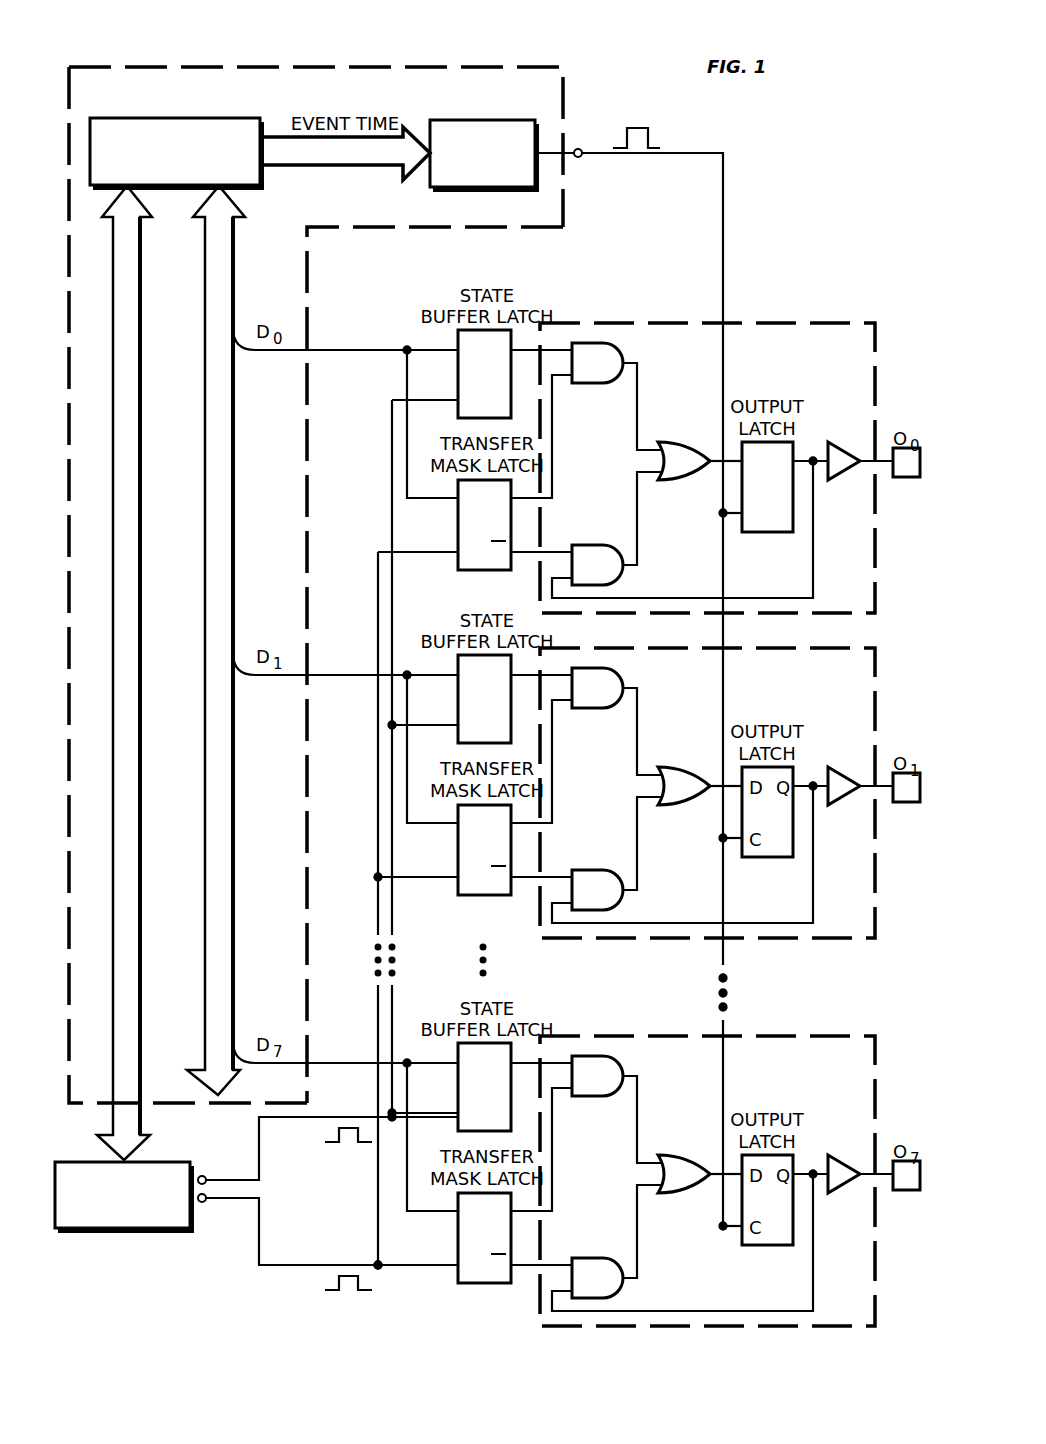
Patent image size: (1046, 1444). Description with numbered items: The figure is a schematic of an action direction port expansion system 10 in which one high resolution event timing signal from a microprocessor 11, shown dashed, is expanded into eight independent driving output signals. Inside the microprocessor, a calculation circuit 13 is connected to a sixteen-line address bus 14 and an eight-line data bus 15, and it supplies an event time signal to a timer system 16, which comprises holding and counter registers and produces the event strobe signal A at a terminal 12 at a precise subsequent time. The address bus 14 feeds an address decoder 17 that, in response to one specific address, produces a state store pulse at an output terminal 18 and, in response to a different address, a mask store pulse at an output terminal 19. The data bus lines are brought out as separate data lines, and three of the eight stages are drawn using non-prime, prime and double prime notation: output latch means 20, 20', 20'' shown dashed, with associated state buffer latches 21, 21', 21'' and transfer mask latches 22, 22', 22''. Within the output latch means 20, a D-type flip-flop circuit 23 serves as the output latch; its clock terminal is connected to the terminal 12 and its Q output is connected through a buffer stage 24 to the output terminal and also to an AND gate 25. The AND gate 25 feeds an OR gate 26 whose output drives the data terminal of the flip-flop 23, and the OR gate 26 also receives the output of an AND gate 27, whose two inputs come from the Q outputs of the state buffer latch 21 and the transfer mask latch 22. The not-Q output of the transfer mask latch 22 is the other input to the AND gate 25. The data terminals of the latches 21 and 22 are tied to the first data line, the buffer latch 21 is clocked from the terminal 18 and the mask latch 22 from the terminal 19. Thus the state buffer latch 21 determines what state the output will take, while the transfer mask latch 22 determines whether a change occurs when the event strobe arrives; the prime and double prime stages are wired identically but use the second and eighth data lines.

The action direction port expansion system 10 is at (184, 1309).
The microprocessor 11 is at (307, 272).
The terminal 12 is at (582, 157).
The calculation circuit 13 is at (175, 118).
The address bus 14 is at (140, 437).
The data bus 15 is at (233, 460).
The timer system 16 is at (483, 120).
The address decoder 17 is at (122, 1231).
The output terminal 18 is at (205, 1177).
The output terminal 19 is at (206, 1202).
The output latch means 20 is at (707, 448).
The output latch means 20' is at (707, 817).
The output latch means 20'' is at (707, 1160).
The state buffer latch 21 is at (462, 374).
The state buffer latch 21' is at (459, 699).
The state buffer latch 21'' is at (457, 1087).
The transfer mask latch 22 is at (462, 525).
The transfer mask latch 22' is at (459, 850).
The transfer mask latch 22'' is at (457, 1238).
The D-type flip-flop circuit 23 is at (768, 532).
The buffer stage 24 is at (840, 480).
The AND gate 25 is at (590, 545).
The OR gate 26 is at (683, 442).
The AND gate 27 is at (600, 386).